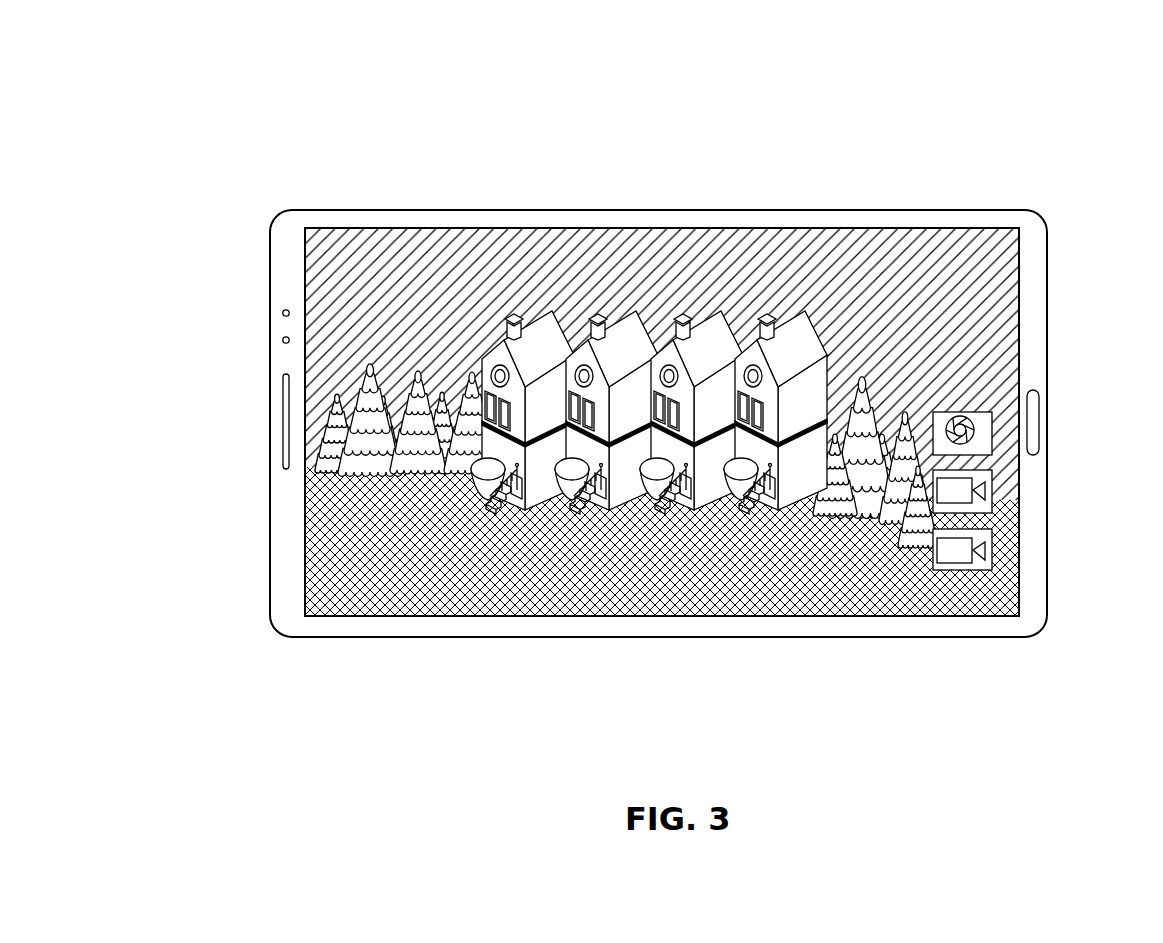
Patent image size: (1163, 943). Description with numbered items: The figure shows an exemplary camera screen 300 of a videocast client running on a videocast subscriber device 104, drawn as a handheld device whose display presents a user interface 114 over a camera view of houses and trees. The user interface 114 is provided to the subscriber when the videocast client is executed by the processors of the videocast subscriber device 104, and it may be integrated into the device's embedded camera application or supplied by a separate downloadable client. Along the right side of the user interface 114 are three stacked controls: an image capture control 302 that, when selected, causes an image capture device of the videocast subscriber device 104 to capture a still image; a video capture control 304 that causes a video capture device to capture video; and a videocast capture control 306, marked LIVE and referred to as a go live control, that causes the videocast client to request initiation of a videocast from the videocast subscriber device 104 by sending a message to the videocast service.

The camera screen 300 is at (180, 71).
The videocast subscriber device 104 is at (503, 211).
The user interface 114 is at (667, 228).
The image capture control 302 is at (992, 410).
The video capture control 304 is at (992, 490).
The videocast capture control 306 is at (992, 547).